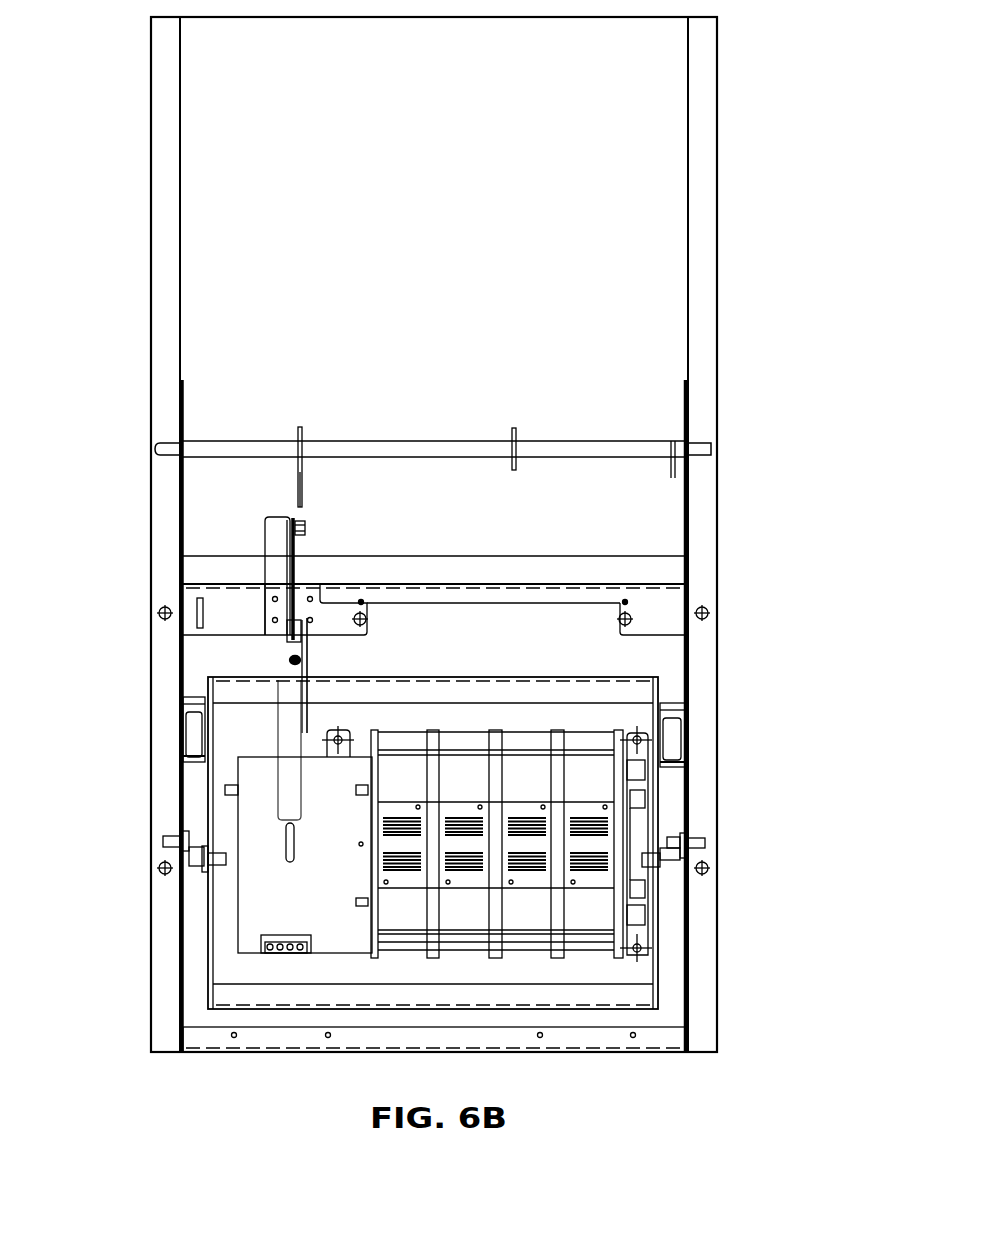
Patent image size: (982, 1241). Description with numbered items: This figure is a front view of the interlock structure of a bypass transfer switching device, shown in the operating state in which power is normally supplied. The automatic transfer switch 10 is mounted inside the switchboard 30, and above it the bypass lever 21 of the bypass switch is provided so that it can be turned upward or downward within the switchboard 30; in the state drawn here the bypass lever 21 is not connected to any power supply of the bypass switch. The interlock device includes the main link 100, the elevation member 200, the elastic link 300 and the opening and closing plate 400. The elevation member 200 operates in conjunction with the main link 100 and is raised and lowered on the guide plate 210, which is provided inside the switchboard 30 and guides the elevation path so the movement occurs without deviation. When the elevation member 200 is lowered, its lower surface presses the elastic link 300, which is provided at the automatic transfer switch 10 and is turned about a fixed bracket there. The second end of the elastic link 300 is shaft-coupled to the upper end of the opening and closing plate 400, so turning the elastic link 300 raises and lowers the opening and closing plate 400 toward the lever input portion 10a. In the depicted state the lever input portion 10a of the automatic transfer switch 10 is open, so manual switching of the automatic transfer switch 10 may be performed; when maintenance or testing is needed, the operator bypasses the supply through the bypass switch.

The switchboard 30 is at (717, 323).
The bypass lever 21 is at (302, 427).
The main link 100 is at (301, 517).
The elevation member 200 is at (297, 545).
The guide plate 210 is at (273, 541).
The elastic link 300 is at (295, 653).
The opening and closing plate 400 is at (275, 727).
The automatic transfer switch 10 is at (660, 705).
The lever input portion 10a is at (286, 845).